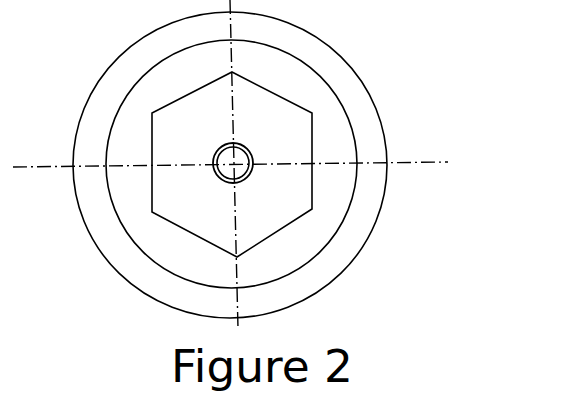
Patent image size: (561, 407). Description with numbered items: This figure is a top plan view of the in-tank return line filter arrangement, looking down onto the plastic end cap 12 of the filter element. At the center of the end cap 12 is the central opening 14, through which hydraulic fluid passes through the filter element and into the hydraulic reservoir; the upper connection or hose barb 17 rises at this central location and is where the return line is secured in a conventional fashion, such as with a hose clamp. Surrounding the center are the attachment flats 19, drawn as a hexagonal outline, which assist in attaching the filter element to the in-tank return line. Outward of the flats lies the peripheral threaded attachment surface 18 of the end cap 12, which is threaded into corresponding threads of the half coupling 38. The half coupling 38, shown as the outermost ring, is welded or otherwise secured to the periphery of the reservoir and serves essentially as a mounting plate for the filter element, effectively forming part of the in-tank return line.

The end cap 12 is at (337, 198).
The central opening 14 is at (232, 163).
The upper connection or hose barb 17 is at (234, 160).
The peripheral threaded attachment surface 18 is at (175, 274).
The attachment flats 19 is at (280, 231).
The half coupling 38 is at (382, 118).